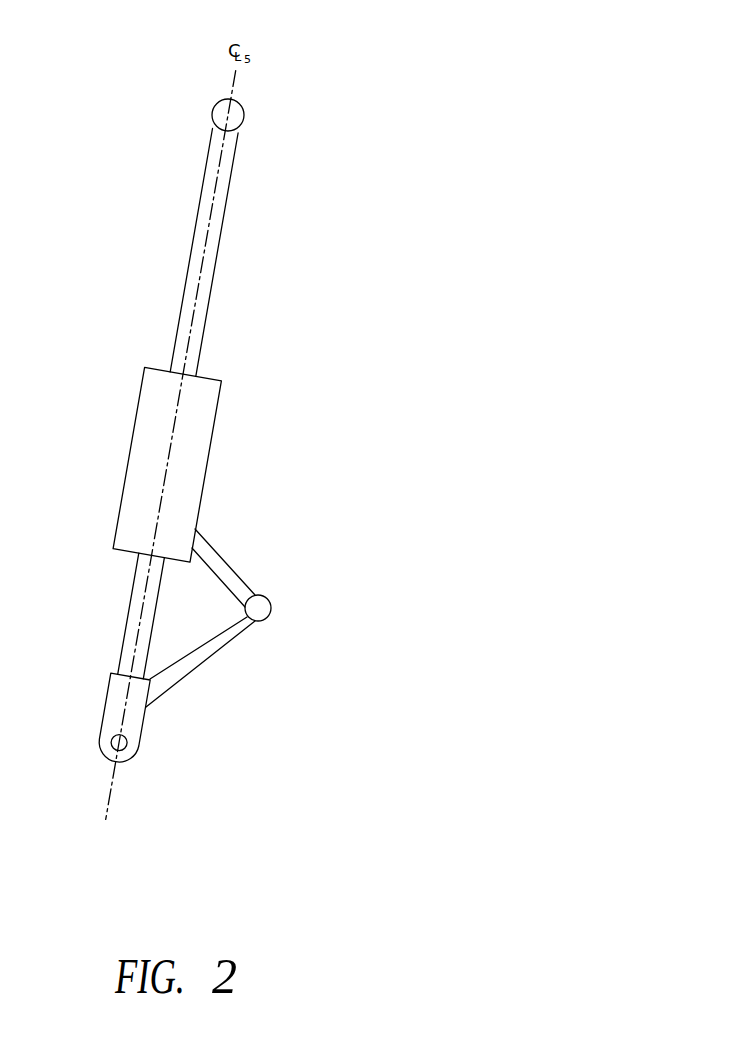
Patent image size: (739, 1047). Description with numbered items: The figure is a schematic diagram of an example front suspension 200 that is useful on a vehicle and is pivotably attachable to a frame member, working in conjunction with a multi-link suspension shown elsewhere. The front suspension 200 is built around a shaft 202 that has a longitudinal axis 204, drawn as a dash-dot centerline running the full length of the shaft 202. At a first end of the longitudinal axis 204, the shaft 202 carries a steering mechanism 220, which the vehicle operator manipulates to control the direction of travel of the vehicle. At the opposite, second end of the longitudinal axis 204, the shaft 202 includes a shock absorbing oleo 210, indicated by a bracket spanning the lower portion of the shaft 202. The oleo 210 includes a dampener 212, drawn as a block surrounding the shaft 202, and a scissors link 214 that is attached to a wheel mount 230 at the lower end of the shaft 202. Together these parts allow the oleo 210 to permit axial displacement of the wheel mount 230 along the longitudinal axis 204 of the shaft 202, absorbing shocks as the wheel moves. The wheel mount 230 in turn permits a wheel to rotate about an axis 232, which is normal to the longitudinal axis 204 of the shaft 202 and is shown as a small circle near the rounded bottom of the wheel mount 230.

The front suspension 200 is at (329, 60).
The shaft 202 is at (203, 341).
The longitudinal axis 204 is at (233, 81).
The shock absorbing oleo 210 is at (120, 361).
The dampener 212 is at (205, 475).
The scissors link 214 is at (247, 583).
The steering mechanism 220 is at (244, 117).
The wheel mount 230 is at (151, 713).
The axis 232 is at (111, 742).